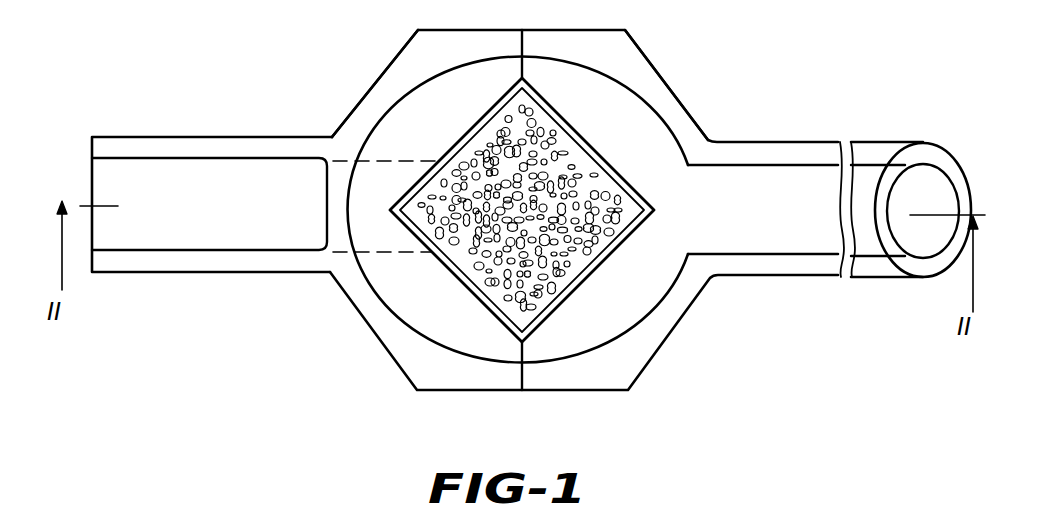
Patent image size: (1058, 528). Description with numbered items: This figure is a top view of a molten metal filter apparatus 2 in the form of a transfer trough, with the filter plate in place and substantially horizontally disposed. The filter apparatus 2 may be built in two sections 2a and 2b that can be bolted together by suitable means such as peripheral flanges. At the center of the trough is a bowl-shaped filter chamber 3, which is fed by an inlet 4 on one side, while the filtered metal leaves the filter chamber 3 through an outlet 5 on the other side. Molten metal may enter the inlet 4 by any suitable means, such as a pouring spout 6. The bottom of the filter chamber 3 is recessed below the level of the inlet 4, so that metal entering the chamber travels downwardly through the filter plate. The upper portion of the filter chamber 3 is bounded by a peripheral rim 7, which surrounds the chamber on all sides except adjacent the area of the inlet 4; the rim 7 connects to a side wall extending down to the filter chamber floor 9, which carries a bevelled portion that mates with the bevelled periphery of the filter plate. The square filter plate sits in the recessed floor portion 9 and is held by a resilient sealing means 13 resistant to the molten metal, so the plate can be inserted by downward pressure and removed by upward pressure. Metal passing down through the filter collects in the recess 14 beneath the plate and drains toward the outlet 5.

The filter apparatus 2 is at (690, 105).
The first section of filter apparatus 2a is at (610, 52).
The second section of filter apparatus 2b is at (407, 65).
The filter chamber 3 is at (412, 298).
The inlet 4 is at (810, 235).
The outlet 5 is at (207, 227).
The pouring spout 6 is at (910, 237).
The peripheral rim 7 is at (340, 187).
The filter chamber floor 9 is at (375, 206).
The resilient sealing means 13 is at (580, 280).
The recess 14 is at (377, 227).